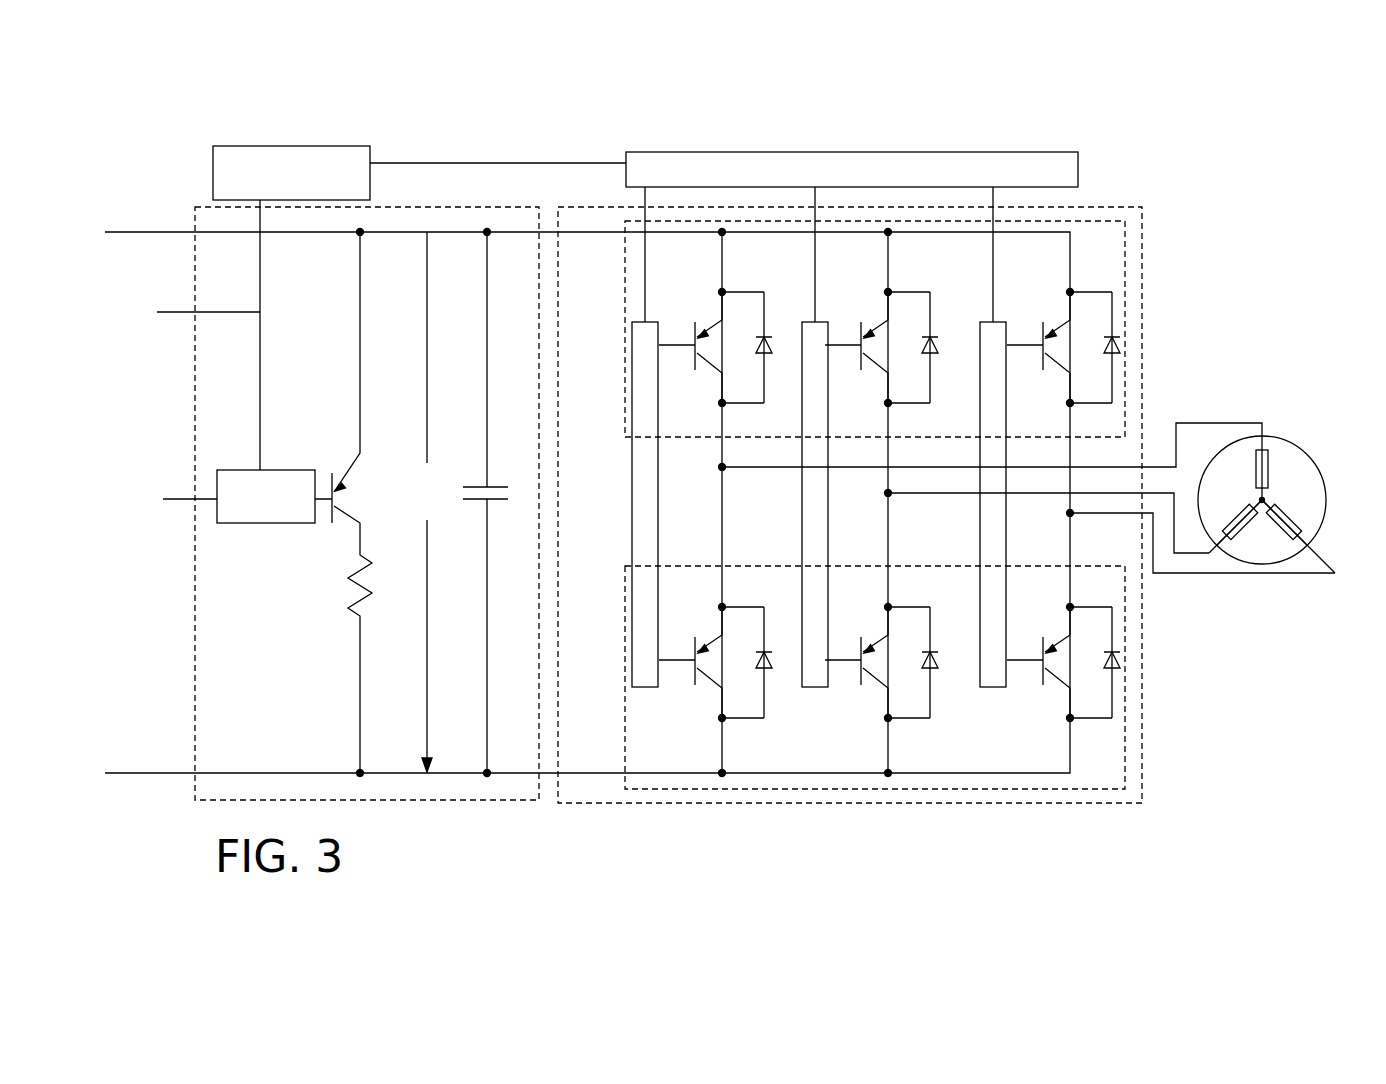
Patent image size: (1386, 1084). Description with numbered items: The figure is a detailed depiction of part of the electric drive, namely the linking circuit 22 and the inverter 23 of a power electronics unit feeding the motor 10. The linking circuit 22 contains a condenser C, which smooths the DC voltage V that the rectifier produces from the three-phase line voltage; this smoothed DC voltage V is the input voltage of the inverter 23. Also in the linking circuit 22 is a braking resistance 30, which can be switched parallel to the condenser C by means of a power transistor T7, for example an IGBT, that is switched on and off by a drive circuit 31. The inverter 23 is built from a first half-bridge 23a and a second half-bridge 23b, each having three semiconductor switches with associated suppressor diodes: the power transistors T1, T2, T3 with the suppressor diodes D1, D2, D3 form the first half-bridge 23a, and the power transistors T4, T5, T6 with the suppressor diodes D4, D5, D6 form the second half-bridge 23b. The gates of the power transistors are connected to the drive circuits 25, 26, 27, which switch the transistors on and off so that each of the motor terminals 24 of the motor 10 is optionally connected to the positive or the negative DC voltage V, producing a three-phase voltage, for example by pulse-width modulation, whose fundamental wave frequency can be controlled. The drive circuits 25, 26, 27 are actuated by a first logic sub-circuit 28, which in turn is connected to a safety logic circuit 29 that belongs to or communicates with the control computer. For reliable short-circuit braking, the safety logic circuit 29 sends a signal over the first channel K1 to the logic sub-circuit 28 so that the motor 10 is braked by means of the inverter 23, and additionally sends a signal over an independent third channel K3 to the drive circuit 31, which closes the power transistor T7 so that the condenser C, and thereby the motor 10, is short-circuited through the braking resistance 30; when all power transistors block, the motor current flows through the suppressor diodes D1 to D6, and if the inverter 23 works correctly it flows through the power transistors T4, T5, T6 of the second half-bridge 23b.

The motor 10 is at (1298, 467).
The linking circuit 22 is at (161, 498).
The inverter 23 is at (1138, 720).
The first half-bridge 23a is at (1113, 238).
The second half-bridge 23b is at (1113, 772).
The motor terminals 24 is at (1264, 428).
The drive circuit 25 is at (632, 500).
The drive circuit 26 is at (802, 520).
The drive circuit 27 is at (980, 530).
The first logic sub-circuit 28 is at (1078, 165).
The safety logic circuit 29 is at (213, 180).
The braking resistance 30 is at (345, 577).
The drive circuit 31 is at (260, 523).
The first channel K1 is at (394, 163).
The third channel K3 is at (184, 313).
The DC voltage V is at (427, 502).
The condenser C is at (497, 503).
The power transistor T1 is at (713, 363).
The power transistor T2 is at (880, 363).
The power transistor T3 is at (1060, 368).
The power transistor T4 is at (715, 680).
The power transistor T5 is at (880, 680).
The power transistor T6 is at (1062, 683).
The power transistor T7 is at (352, 480).
The suppressor diode D1 is at (767, 335).
The suppressor diode D2 is at (933, 335).
The suppressor diode D3 is at (1118, 340).
The suppressor diode D4 is at (767, 666).
The suppressor diode D5 is at (932, 666).
The suppressor diode D6 is at (1117, 660).